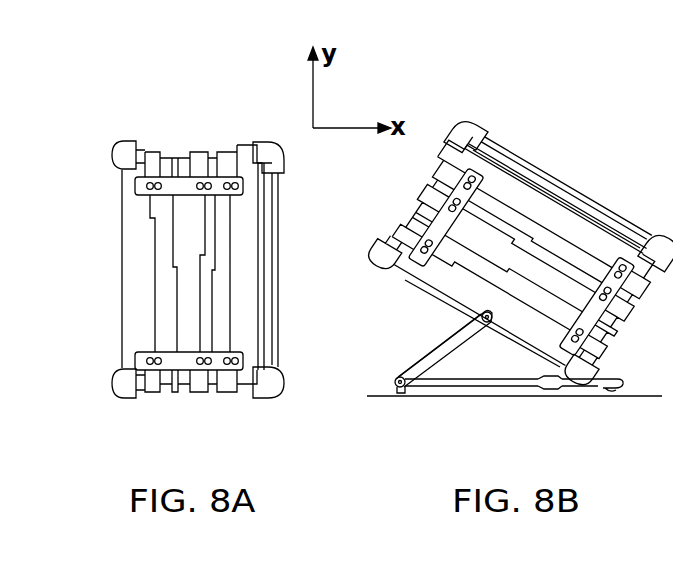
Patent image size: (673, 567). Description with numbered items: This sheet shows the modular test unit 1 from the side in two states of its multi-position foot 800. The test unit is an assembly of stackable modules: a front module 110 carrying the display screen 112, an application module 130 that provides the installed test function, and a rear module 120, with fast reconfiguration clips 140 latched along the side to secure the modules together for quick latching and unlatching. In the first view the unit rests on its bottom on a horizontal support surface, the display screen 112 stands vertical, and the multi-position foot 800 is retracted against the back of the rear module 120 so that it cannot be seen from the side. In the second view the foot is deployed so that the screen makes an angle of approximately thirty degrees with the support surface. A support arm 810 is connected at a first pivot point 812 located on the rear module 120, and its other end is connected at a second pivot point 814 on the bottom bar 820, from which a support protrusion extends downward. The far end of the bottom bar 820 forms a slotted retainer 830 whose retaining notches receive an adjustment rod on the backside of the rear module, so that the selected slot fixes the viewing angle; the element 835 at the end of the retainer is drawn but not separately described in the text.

In FIG. 8A, the front module 110 is at (248, 172).
In FIG. 8B, the front module 110 is at (449, 147).
In FIG. 8A, the display screen 112 is at (280, 203).
In FIG. 8B, the display screen 112 is at (571, 188).
In FIG. 8A, the rear module 120 is at (130, 263).
In FIG. 8B, the rear module 120 is at (413, 277).
In FIG. 8A, the application module 130 is at (168, 210).
In FIG. 8B, the application module 130 is at (440, 176).
In FIG. 8A, the fast reconfiguration clips 140 is at (140, 199).
In FIG. 8B, the device 1 is at (668, 203).
In FIG. 8B, the multi-position foot 800 is at (372, 363).
In FIG. 8B, the support arm 810 is at (423, 360).
In FIG. 8B, the first pivot point 812 is at (462, 302).
In FIG. 8B, the second pivot point 814 is at (393, 379).
In FIG. 8B, the bottom bar 820 is at (435, 386).
In FIG. 8B, the slotted retainer 830 is at (505, 388).
In FIG. 8B, the plate end 835 is at (613, 388).